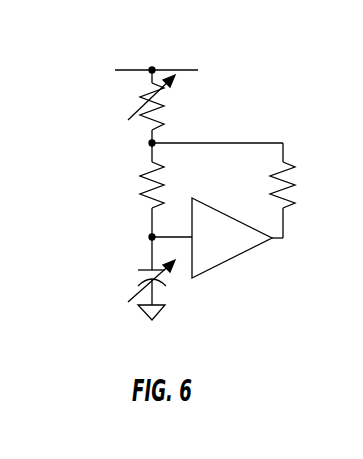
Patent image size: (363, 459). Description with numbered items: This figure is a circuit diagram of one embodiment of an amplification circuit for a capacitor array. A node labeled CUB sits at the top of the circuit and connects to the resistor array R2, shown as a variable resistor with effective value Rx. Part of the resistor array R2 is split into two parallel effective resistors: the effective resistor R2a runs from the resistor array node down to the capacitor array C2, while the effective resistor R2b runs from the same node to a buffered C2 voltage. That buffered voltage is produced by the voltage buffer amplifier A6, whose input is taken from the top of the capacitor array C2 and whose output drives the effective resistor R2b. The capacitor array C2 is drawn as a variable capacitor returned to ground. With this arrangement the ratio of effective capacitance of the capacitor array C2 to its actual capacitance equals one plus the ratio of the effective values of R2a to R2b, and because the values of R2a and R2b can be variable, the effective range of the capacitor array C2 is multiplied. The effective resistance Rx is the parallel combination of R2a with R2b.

The CUB node / supply line CUB is at (156, 58).
The resistor array R2 is at (116, 106).
The effective resistor R2a is at (133, 190).
The effective resistor R2b is at (265, 190).
The voltage buffer amplifier A6 is at (232, 238).
The capacitor array C2 is at (116, 278).